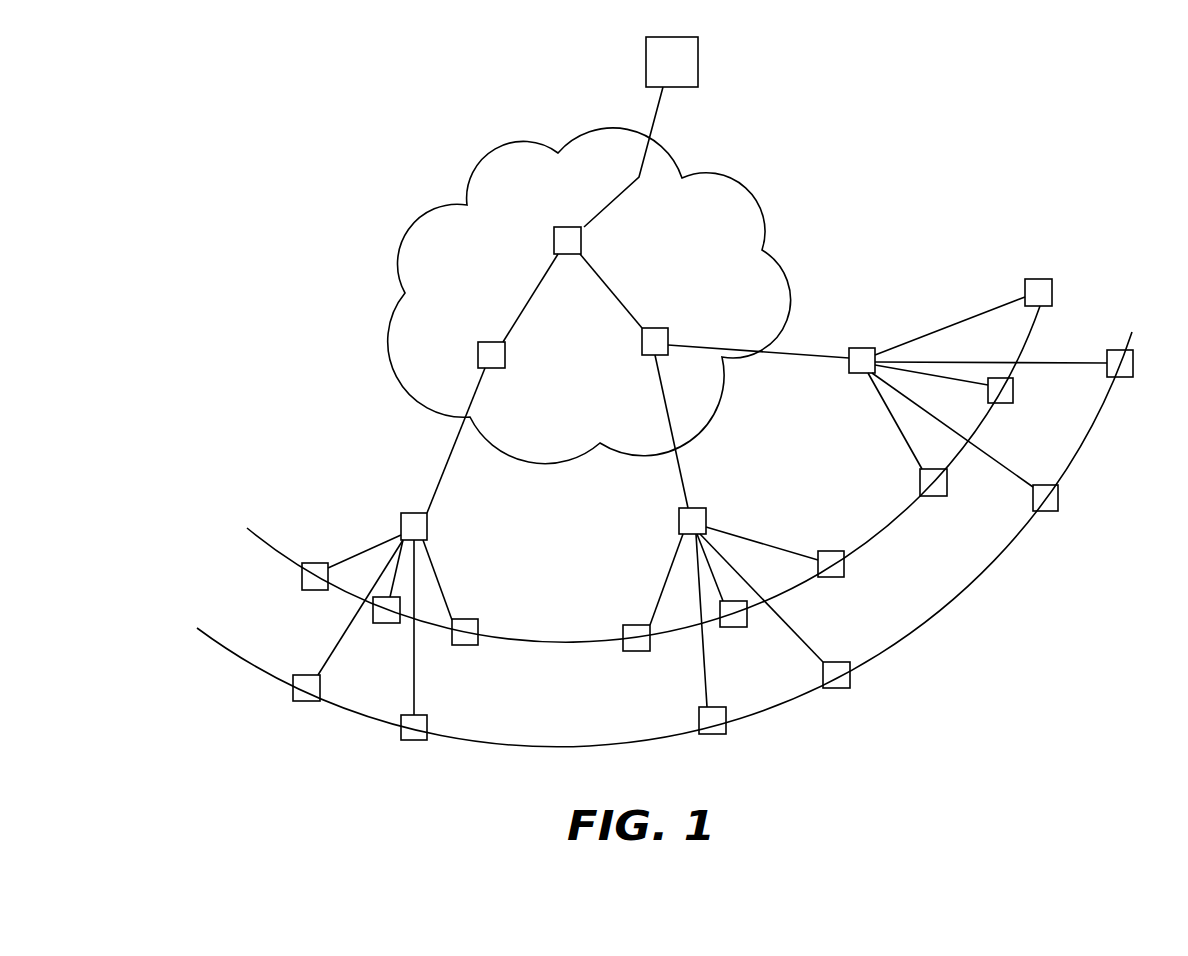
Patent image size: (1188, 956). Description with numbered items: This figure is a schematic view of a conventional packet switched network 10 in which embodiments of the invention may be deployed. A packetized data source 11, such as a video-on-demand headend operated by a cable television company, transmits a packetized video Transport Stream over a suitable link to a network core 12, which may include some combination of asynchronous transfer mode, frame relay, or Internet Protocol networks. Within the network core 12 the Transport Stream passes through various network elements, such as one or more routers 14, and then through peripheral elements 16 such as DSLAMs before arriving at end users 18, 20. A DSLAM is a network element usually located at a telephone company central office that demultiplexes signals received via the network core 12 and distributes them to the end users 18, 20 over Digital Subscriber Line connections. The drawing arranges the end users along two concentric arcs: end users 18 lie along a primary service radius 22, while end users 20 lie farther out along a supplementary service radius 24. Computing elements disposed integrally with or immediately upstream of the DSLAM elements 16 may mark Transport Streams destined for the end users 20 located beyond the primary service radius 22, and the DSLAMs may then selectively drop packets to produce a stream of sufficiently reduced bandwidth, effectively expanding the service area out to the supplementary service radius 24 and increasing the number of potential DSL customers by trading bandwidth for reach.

The packet switched network 10 is at (372, 144).
The packetized data source 11 is at (672, 62).
The network core 12 is at (712, 182).
The router 14 is at (570, 233).
The peripheral element 16 is at (412, 522).
The end user 18 is at (317, 568).
The end user 20 is at (305, 678).
The primary service radius 22 is at (268, 548).
The supplementary service radius 24 is at (268, 673).